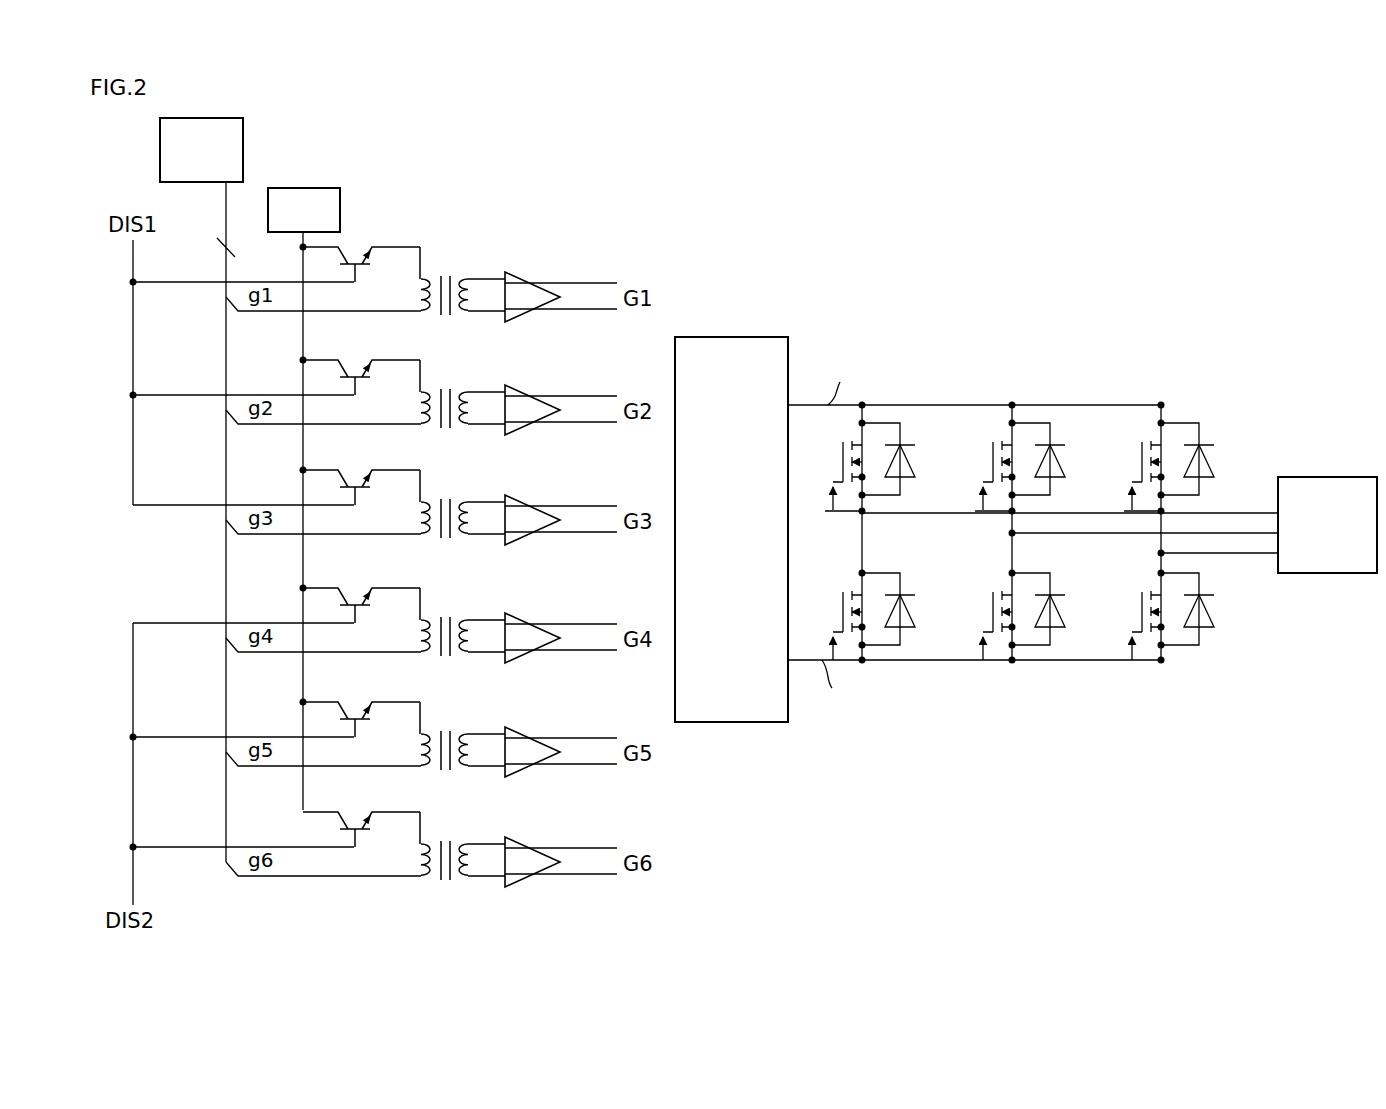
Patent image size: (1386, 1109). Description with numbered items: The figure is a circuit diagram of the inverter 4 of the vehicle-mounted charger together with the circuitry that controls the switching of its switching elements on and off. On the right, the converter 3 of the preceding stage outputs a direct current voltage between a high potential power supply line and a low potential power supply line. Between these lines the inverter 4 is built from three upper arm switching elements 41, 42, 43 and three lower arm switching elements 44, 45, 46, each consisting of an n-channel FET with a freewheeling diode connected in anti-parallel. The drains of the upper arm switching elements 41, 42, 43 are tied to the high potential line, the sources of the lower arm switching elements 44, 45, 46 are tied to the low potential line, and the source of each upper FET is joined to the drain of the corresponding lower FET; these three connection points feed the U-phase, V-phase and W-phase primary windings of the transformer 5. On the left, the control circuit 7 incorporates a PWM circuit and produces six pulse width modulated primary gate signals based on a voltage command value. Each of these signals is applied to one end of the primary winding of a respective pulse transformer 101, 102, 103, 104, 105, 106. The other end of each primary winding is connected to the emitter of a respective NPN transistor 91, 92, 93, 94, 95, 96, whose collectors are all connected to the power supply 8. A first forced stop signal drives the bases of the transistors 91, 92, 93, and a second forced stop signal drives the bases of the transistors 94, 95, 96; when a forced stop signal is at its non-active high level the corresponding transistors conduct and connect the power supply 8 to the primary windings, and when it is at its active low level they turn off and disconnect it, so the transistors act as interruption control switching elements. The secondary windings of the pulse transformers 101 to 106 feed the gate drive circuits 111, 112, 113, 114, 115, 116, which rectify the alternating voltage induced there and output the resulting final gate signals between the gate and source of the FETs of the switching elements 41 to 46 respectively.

The converter 3 is at (760, 337).
The inverter 4 is at (1033, 565).
The transformer 5 is at (1330, 477).
The control circuit 7 is at (205, 118).
The power supply 8 is at (308, 188).
The upper arm switching element 41 is at (907, 422).
The upper arm switching element 42 is at (1058, 420).
The upper arm switching element 43 is at (1185, 412).
The lower arm switching element 44 is at (912, 635).
The lower arm switching element 45 is at (1027, 652).
The lower arm switching element 46 is at (1185, 660).
The transistor 91 is at (350, 257).
The transistor 92 is at (350, 370).
The transistor 93 is at (350, 480).
The transistor 94 is at (350, 598).
The transistor 95 is at (350, 712).
The transistor 96 is at (350, 822).
The pulse transformer 101 is at (445, 273).
The pulse transformer 102 is at (445, 386).
The pulse transformer 103 is at (445, 496).
The pulse transformer 104 is at (445, 614).
The pulse transformer 105 is at (445, 728).
The pulse transformer 106 is at (445, 838).
The gate drive circuit 111 is at (522, 280).
The gate drive circuit 112 is at (522, 393).
The gate drive circuit 113 is at (522, 503).
The gate drive circuit 114 is at (522, 621).
The gate drive circuit 115 is at (522, 735).
The gate drive circuit 116 is at (522, 845).